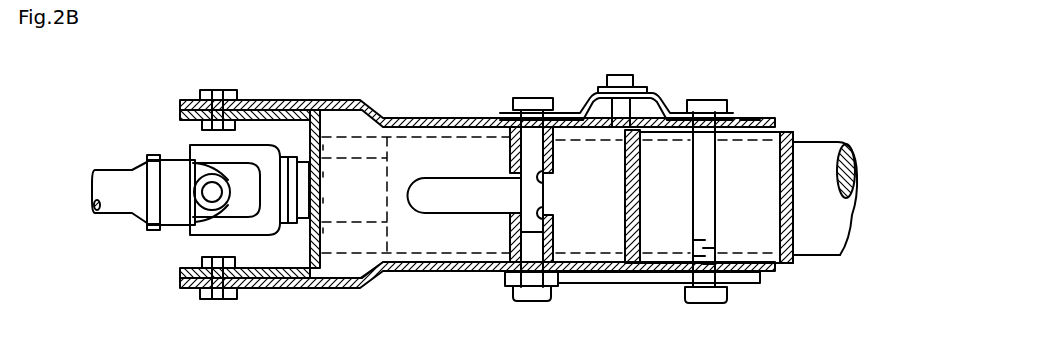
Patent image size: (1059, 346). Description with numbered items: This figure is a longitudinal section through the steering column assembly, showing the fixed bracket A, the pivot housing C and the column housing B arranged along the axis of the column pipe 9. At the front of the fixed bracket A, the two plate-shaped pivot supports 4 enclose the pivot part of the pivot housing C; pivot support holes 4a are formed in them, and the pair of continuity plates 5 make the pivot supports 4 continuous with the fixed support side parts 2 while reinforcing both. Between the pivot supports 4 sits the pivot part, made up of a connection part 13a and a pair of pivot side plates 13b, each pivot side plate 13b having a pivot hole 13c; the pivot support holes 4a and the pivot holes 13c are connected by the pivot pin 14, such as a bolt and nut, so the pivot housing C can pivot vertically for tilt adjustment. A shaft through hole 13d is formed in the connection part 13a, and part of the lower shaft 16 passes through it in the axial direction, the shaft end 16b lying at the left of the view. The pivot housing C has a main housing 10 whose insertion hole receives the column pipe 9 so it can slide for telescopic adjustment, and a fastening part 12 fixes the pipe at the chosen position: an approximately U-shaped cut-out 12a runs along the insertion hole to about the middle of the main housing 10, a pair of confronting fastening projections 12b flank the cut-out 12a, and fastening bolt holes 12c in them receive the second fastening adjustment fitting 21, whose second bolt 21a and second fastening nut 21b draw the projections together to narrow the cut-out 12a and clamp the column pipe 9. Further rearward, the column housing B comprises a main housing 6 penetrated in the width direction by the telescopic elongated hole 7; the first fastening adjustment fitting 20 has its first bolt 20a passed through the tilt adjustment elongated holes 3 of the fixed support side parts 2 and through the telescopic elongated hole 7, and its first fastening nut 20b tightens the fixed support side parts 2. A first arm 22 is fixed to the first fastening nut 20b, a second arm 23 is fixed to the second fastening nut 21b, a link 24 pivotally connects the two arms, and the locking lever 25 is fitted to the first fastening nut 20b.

The fixed support side part 2 is at (742, 116).
The tilt adjustment elongated hole 3 is at (513, 137).
The pivot support 4 is at (320, 100).
The pivot support hole 4a is at (216, 91).
The continuity plate 5 is at (466, 117).
The main housing 6 is at (797, 172).
The telescopic elongated hole 7 is at (765, 228).
The column pipe 9 is at (805, 262).
The main housing 10 is at (370, 283).
The fastening part 12 is at (502, 223).
The cut-out 12a is at (447, 197).
The fastening projection 12b is at (554, 156).
The fastening bolt hole 12c is at (554, 178).
The connection part 13a is at (322, 200).
The pivot side plate 13b is at (178, 127).
The pivot hole 13c is at (200, 143).
The shaft through hole 13d is at (322, 177).
The pivot pin 14 is at (224, 90).
The lower shaft 16 is at (92, 208).
The shaft yoke 16b is at (188, 218).
The first fastening adjustment fitting 20 is at (707, 190).
The first bolt 20a is at (704, 217).
The first fastening nut 20b is at (728, 298).
The second fastening adjustment fitting 21 is at (530, 167).
The second bolt 21a is at (522, 232).
The second fastening nut 21b is at (558, 301).
The first arm 22 is at (728, 271).
The second arm 23 is at (512, 287).
The link 24 is at (645, 284).
The locking lever 25 is at (616, 63).
The fixed bracket A is at (414, 116).
The column housing B is at (783, 130).
The pivot housing C is at (433, 232).